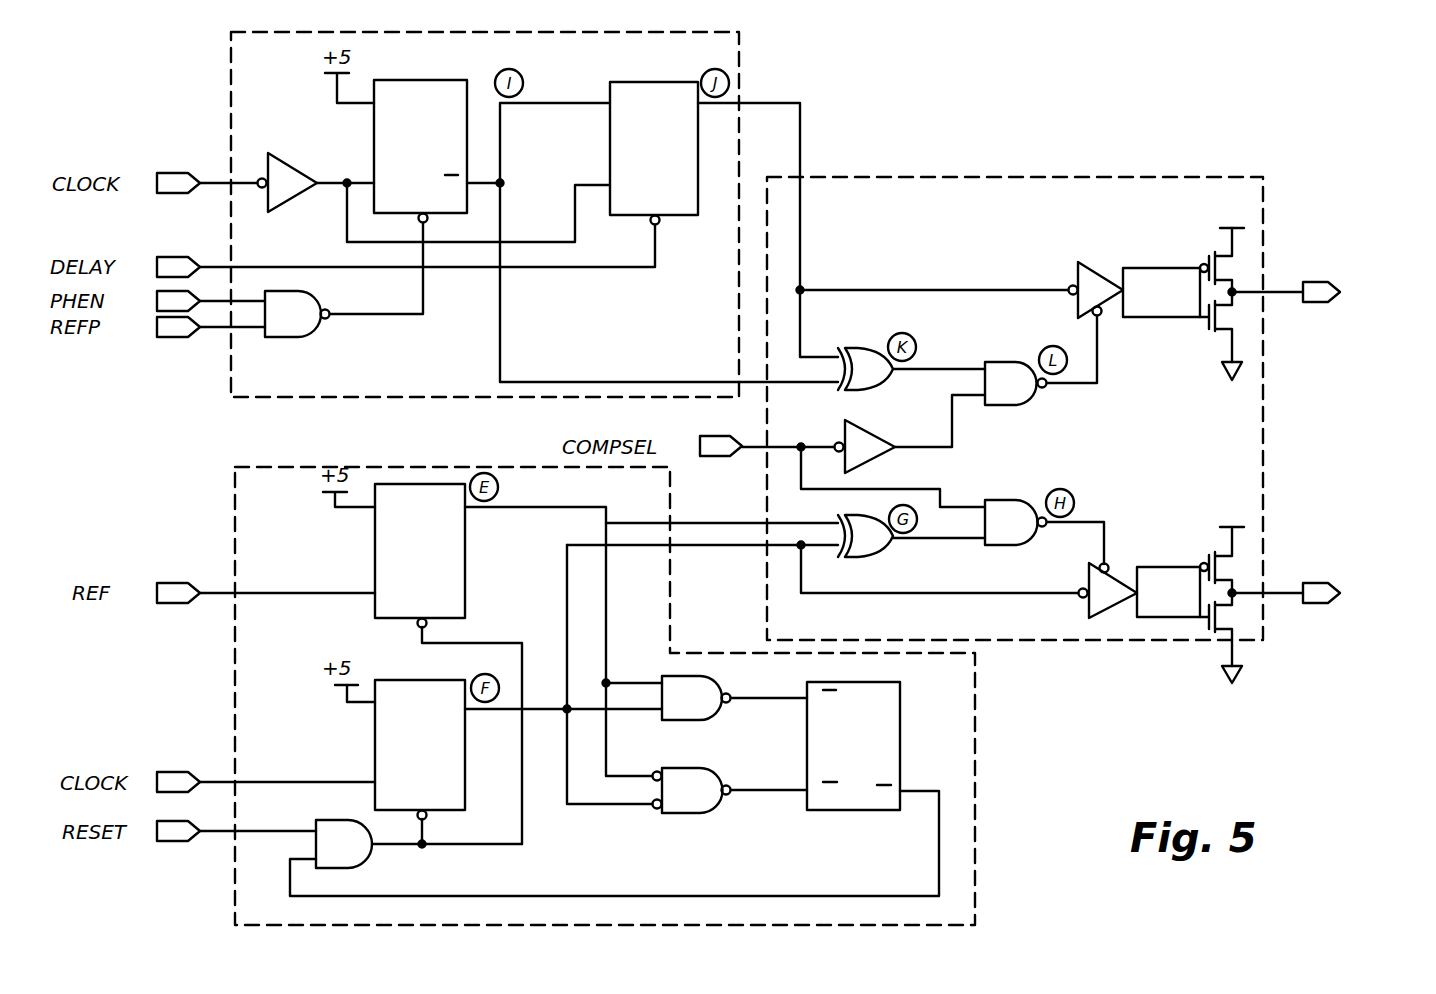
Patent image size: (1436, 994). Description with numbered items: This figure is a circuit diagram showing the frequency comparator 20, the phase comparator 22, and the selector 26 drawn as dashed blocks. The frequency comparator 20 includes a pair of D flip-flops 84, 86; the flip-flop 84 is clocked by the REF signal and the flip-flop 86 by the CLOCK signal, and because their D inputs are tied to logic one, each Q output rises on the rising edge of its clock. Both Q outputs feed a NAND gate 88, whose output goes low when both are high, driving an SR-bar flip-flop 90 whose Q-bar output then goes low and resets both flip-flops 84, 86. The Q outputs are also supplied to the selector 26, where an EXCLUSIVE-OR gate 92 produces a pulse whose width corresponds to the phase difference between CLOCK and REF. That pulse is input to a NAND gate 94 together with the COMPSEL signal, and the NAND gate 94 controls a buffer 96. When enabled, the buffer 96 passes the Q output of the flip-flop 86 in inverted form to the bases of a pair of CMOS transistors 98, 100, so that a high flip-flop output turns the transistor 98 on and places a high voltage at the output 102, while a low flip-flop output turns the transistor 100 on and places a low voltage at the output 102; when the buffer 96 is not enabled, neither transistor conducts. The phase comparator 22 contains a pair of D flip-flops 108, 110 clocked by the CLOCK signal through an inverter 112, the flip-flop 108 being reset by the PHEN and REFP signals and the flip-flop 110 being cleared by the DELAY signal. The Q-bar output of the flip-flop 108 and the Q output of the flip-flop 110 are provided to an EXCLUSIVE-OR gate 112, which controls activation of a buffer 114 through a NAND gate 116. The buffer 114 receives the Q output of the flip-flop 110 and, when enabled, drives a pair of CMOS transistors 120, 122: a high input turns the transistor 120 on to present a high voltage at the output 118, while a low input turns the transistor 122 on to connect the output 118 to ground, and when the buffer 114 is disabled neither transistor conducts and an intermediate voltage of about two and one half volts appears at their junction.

The frequency comparator 20 is at (976, 755).
The phase comparator 22 is at (742, 73).
The selector 26 is at (1083, 178).
The D flip-flop 84 is at (402, 546).
The D flip-flop 86 is at (395, 745).
The NAND gate 88 is at (690, 712).
The SR-bar flip-flop 90 is at (898, 726).
The EXCLUSIVE-OR gate 92 is at (878, 546).
The NAND gate 94 is at (1028, 501).
The buffer 96 is at (1086, 577).
The CMOS transistor 98 is at (1215, 556).
The CMOS transistor 100 is at (1222, 641).
The output 102 is at (1318, 588).
The D flip-flop 108 is at (421, 108).
The D flip-flop 110 is at (630, 139).
The inverter / EXCLUSIVE-OR gate 112 is at (296, 172).
The buffer 114 is at (1078, 270).
The NAND gate 116 is at (1023, 400).
The output 118 is at (1316, 285).
The CMOS transistor 120 is at (1215, 256).
The CMOS transistor 122 is at (1222, 332).